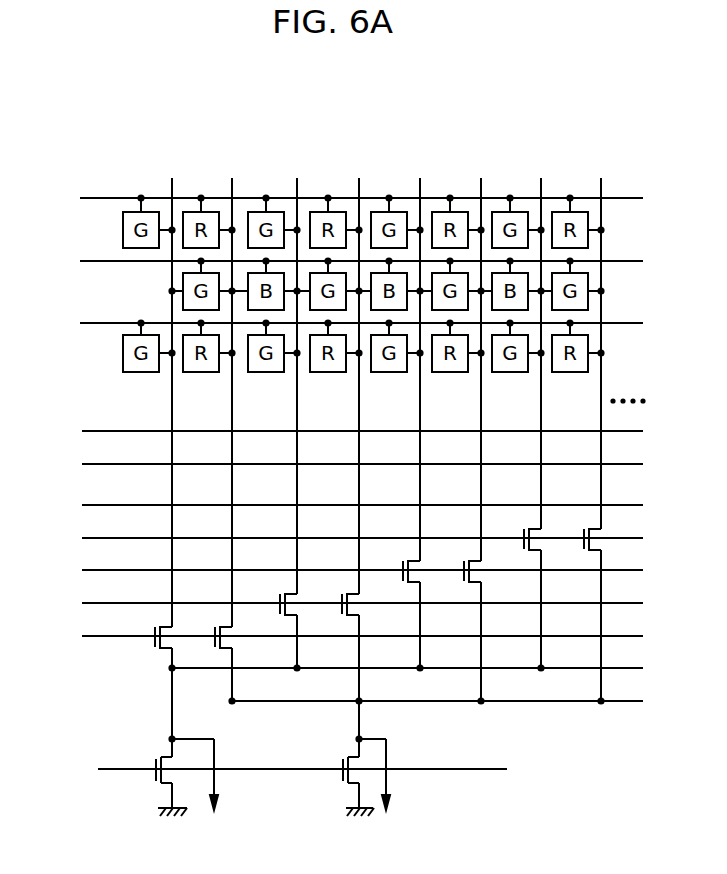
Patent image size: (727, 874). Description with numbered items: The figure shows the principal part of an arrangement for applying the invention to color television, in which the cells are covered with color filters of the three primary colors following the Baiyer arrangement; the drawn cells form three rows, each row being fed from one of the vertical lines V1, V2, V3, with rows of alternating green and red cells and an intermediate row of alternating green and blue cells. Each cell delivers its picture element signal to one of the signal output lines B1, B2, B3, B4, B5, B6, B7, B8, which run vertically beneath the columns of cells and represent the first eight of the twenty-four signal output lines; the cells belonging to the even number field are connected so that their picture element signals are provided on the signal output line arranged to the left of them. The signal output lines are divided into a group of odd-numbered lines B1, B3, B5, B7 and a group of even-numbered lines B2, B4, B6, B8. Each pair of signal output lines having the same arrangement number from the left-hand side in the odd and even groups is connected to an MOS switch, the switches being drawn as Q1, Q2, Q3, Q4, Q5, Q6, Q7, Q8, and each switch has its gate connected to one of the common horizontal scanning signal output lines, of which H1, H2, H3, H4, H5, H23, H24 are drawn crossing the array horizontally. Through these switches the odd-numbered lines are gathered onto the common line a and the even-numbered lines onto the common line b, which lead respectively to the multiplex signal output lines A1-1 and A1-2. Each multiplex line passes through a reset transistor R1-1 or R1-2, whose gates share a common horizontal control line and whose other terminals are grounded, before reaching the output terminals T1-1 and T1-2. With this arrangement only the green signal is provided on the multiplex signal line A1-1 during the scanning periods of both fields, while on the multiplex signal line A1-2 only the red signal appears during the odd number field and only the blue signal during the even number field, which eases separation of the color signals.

The vertical drive line V1 is at (341, 324).
The vertical drive line V2 is at (341, 262).
The vertical drive line V3 is at (341, 199).
The common horizontal scanning signal output line H1 is at (341, 636).
The common horizontal scanning signal output line H2 is at (341, 603).
The common horizontal scanning signal output line H3 is at (341, 570).
The common horizontal scanning signal output line H4 is at (341, 538).
The common horizontal scanning signal output line H5 is at (341, 505).
The common horizontal scanning signal output line H23 is at (330, 464).
The common horizontal scanning signal output line H24 is at (330, 431).
The odd-numbered signal output line B1 is at (158, 423).
The even-numbered signal output line B2 is at (218, 439).
The odd-numbered signal output line B3 is at (283, 423).
The even-numbered signal output line B4 is at (345, 439).
The odd-numbered signal output line B5 is at (406, 423).
The even-numbered signal output line B6 is at (467, 439).
The odd-numbered signal output line B7 is at (527, 423).
The even-numbered signal output line B8 is at (587, 439).
The switching transistor Q1 is at (150, 628).
The switching transistor Q2 is at (210, 628).
The switching transistor Q3 is at (275, 595).
The switching transistor Q4 is at (337, 595).
The switching transistor Q5 is at (398, 562).
The switching transistor Q6 is at (459, 562).
The switching transistor Q7 is at (519, 530).
The switching transistor Q8 is at (579, 530).
The output line a is at (416, 669).
The output line b is at (446, 702).
The multiplex signal output line A1-1 is at (146, 712).
The multiplex signal output line A1-2 is at (331, 729).
The reset transistor R1-1 is at (302, 786).
The reset transistor R1-2 is at (331, 786).
The output terminal T1-1 is at (202, 788).
The output terminal T1-2 is at (390, 788).